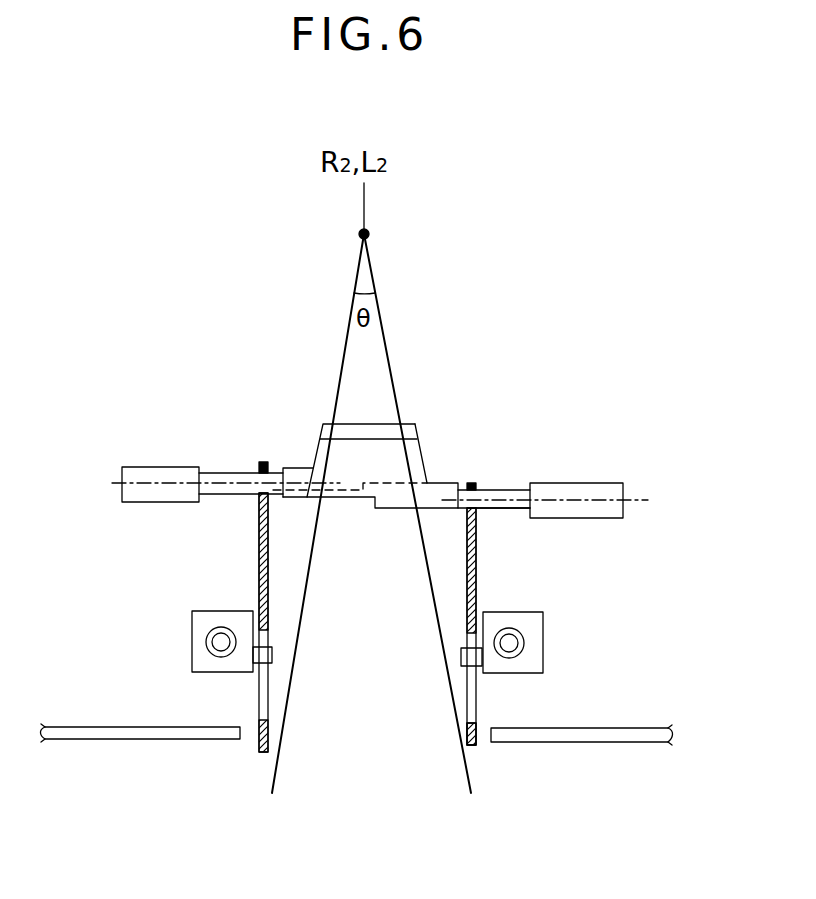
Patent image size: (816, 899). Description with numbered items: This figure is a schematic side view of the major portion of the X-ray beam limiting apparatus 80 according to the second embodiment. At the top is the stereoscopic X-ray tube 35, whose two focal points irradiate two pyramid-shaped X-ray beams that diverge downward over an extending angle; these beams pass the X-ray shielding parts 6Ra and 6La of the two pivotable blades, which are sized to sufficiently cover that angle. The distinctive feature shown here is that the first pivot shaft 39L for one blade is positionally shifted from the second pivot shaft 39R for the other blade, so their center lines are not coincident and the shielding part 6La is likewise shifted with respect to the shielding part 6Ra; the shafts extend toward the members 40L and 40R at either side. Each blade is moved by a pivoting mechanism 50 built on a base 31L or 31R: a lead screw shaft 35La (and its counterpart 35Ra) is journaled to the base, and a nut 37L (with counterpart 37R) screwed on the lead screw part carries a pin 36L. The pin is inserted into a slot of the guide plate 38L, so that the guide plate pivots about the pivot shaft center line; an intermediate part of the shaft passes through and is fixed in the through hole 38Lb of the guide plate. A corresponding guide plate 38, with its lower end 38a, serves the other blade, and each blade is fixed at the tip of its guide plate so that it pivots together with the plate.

The stereoscopic X-ray tube 35 is at (382, 245).
The X-ray shielding part 6Ra is at (320, 450).
The X-ray shielding part 6La is at (407, 425).
The second pivot shaft 39R is at (232, 495).
The first pivot shaft 39L is at (511, 490).
The right motor 40R is at (163, 503).
The left motor 40L is at (607, 483).
The support plate 38 is at (259, 745).
The guide plate 38L is at (467, 605).
The through hole 38Lb is at (478, 509).
The support plate lower end 38a is at (467, 727).
The pin 36L is at (461, 657).
The right guide block 37R is at (192, 625).
The nut 37L is at (543, 660).
The right guide rail 35Ra is at (210, 648).
The lead screw shaft 35La is at (525, 637).
The right base plate 31R is at (120, 742).
The base 31L is at (615, 745).
The pivoting mechanism 50 is at (508, 755).
The X-ray beam limiting apparatus 80 is at (572, 748).